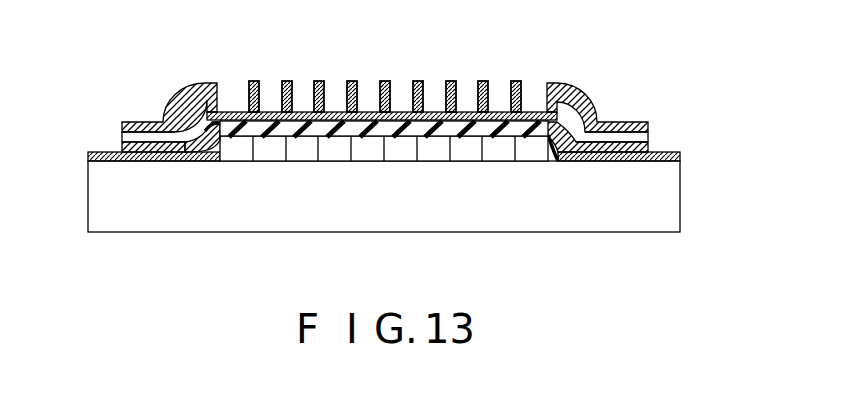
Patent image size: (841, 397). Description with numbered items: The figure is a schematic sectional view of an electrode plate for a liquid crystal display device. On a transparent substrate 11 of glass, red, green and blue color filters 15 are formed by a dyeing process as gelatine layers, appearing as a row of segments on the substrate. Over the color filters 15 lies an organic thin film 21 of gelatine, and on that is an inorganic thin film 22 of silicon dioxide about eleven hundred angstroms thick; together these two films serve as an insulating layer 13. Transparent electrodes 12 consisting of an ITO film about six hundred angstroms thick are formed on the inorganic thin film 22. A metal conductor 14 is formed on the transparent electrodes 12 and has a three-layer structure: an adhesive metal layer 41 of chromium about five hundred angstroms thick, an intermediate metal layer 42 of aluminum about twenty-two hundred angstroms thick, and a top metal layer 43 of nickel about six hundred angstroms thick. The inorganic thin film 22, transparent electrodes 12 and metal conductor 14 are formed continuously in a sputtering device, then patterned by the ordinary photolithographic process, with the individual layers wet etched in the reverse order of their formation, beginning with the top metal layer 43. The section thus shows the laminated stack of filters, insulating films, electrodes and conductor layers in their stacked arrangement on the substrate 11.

The transparent substrate 11 is at (662, 207).
The transparent electrodes 12 is at (404, 211).
The insulating layer 13 is at (442, 211).
The metal conductor 14 is at (416, 103).
The color filters 15 is at (532, 157).
The organic thin film 21 is at (553, 163).
The inorganic thin film 22 is at (608, 165).
The adhesive metal layer 41 is at (650, 147).
The intermediate metal layer 42 is at (637, 137).
The top metal layer 43 is at (627, 122).